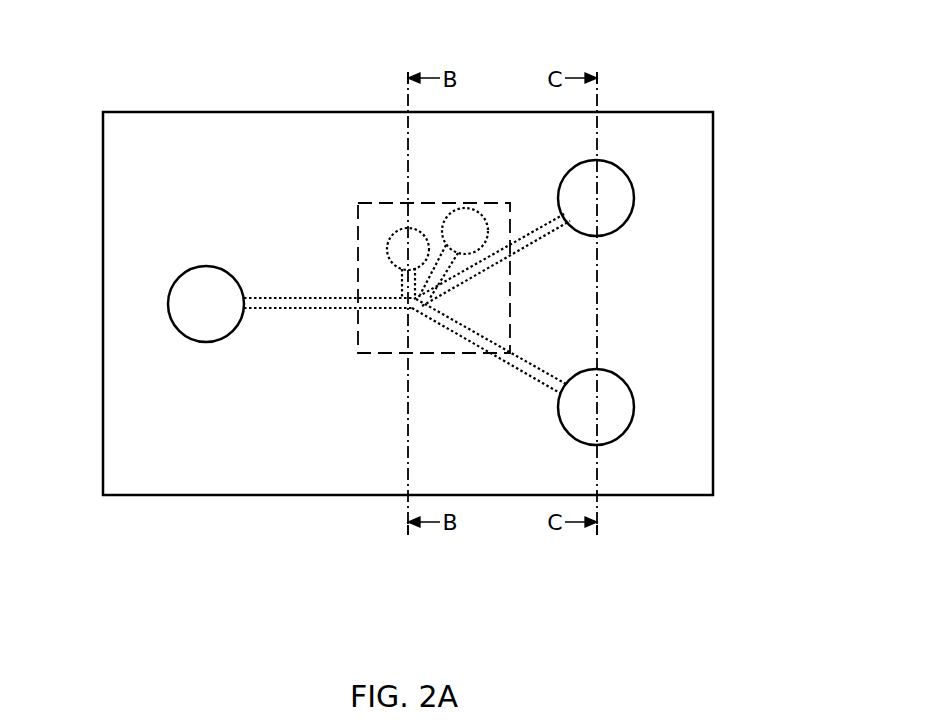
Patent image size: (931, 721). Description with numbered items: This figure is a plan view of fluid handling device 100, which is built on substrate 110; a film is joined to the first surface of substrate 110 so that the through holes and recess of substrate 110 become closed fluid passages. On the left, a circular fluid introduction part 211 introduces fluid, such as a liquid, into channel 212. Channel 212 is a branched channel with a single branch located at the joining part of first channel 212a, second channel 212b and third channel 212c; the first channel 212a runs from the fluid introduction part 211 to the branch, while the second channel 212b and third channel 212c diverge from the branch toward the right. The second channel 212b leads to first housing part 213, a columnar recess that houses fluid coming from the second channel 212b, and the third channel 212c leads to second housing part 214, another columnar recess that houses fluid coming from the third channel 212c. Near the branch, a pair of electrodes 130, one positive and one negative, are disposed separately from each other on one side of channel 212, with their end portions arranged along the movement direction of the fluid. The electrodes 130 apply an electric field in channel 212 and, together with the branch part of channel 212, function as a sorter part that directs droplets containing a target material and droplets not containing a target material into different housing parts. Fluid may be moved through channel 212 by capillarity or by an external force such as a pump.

The fluid handling device 100 is at (703, 53).
The substrate 110 is at (706, 272).
The electrodes 130 is at (422, 228).
The fluid introduction part 211 is at (206, 266).
The channel 212 is at (413, 435).
The first channel 212a is at (397, 308).
The second channel 212b is at (450, 287).
The third channel 212c is at (488, 352).
The first housing part 213 is at (617, 162).
The second housing part 214 is at (615, 443).